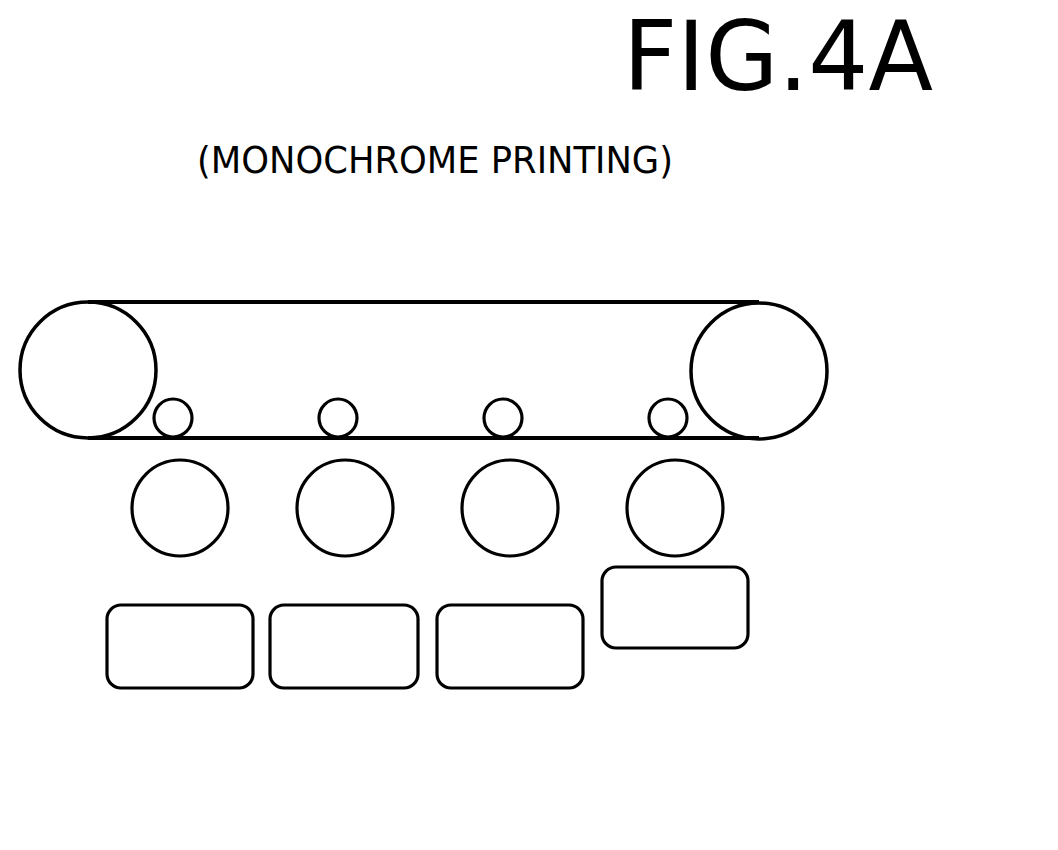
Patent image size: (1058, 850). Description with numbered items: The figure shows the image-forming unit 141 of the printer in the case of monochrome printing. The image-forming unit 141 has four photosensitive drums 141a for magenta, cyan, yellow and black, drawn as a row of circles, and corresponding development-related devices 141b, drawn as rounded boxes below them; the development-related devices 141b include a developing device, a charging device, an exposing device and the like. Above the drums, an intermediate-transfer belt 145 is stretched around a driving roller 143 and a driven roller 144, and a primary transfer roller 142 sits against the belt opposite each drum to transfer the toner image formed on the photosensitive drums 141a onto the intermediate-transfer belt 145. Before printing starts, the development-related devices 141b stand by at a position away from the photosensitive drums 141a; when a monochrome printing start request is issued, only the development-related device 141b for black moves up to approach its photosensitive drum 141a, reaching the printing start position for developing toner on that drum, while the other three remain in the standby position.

The image-forming unit 141 is at (520, 637).
The photosensitive drums 141a is at (733, 508).
The development-related devices 141b is at (520, 627).
The primary transfer roller 142 is at (662, 380).
The driving roller 143 is at (785, 388).
The driven roller 144 is at (113, 388).
The intermediate-transfer belt 145 is at (196, 262).